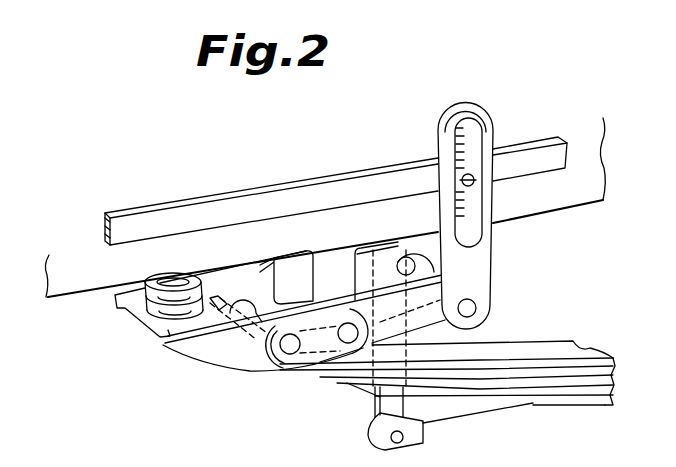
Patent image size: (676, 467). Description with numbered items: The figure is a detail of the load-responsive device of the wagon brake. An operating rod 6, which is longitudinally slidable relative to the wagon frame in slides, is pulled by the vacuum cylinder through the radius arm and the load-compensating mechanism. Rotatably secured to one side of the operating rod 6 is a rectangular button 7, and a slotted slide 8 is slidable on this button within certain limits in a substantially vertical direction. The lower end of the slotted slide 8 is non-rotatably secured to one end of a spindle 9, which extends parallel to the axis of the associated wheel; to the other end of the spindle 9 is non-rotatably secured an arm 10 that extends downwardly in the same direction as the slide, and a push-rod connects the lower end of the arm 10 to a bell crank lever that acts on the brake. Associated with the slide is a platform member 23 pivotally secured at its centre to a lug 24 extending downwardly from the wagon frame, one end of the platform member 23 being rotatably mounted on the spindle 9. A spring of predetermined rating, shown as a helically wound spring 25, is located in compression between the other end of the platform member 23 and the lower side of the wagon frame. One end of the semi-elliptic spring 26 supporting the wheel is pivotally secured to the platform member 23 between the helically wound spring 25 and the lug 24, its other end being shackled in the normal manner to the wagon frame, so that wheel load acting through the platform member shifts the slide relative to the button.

The operating rod 6 is at (198, 217).
The rectangular button 7 is at (474, 176).
The slotted slide 8 is at (450, 142).
The spindle 9 is at (423, 271).
The arm 10 is at (375, 402).
The platform member 23 is at (243, 353).
The lug 24 is at (333, 286).
The helically wound spring 25 is at (150, 298).
The semi-elliptic spring 26 is at (562, 352).